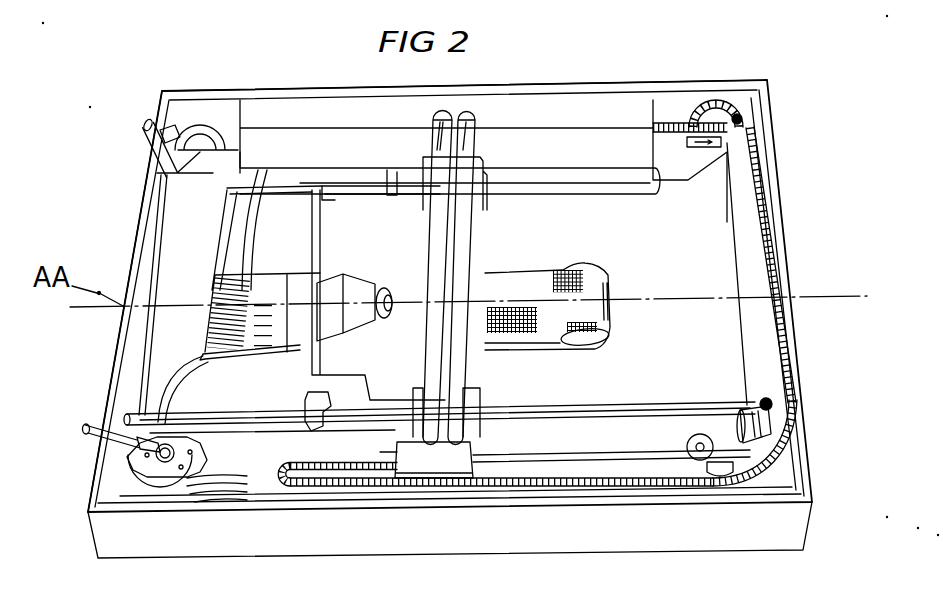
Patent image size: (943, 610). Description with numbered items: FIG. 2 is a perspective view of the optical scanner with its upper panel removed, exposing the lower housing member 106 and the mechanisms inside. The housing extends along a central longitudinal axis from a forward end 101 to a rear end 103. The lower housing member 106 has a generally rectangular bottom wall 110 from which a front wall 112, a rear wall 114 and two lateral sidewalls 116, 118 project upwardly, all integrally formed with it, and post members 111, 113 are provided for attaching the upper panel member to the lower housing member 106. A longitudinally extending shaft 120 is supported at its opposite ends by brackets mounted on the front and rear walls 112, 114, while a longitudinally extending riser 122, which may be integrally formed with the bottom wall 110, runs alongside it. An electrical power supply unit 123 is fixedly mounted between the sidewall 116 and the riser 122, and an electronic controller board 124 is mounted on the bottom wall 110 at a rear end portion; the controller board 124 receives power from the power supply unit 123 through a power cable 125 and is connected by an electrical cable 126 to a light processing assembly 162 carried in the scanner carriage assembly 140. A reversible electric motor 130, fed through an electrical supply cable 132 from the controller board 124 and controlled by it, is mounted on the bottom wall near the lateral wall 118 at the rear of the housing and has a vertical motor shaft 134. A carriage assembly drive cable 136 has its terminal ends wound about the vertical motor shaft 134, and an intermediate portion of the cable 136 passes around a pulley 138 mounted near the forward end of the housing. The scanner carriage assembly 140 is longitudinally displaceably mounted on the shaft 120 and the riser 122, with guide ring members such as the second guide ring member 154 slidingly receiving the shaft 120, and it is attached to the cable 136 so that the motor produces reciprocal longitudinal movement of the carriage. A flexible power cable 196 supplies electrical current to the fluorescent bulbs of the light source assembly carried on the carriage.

The forward end 101 is at (796, 329).
The rear end 103 is at (120, 338).
The lower housing member 106 is at (779, 184).
The bottom wall 110 is at (661, 286).
The post member 111 is at (728, 110).
The front wall 112 is at (784, 208).
The post member 113 is at (786, 407).
The rear wall 114 is at (138, 270).
The lateral sidewall 116 is at (228, 93).
The lateral sidewall 118 is at (316, 543).
The longitudinally extending shaft 120 is at (640, 408).
The longitudinally extending riser 122 is at (267, 173).
The electrical power supply unit 123 is at (624, 112).
The electronic controller board 124 is at (250, 297).
The power cable 125 is at (277, 208).
The electrical cable 126 is at (606, 268).
The reversible electric motor 130 is at (158, 486).
The electrical supply cable 132 is at (167, 378).
The vertical motor shaft 134 is at (141, 451).
The carriage assembly drive cable 136 is at (242, 457).
The pulley 138 is at (685, 448).
The scanner carriage assembly 140 is at (500, 229).
The second guide ring member 154 is at (310, 408).
The light processing assembly 162 is at (350, 258).
The flexible power cable 196 is at (765, 441).